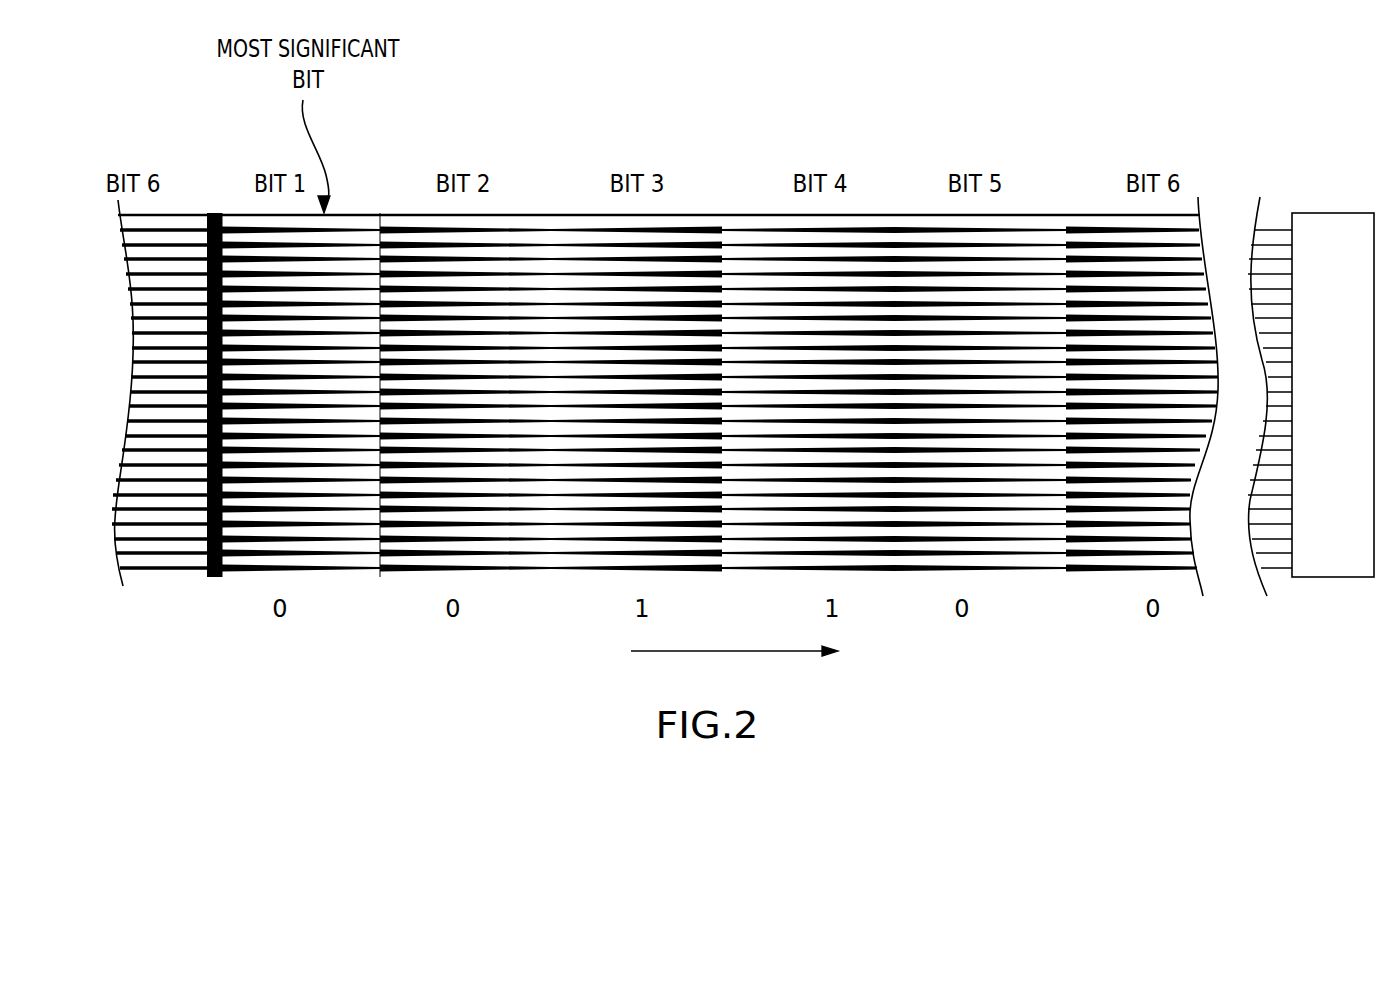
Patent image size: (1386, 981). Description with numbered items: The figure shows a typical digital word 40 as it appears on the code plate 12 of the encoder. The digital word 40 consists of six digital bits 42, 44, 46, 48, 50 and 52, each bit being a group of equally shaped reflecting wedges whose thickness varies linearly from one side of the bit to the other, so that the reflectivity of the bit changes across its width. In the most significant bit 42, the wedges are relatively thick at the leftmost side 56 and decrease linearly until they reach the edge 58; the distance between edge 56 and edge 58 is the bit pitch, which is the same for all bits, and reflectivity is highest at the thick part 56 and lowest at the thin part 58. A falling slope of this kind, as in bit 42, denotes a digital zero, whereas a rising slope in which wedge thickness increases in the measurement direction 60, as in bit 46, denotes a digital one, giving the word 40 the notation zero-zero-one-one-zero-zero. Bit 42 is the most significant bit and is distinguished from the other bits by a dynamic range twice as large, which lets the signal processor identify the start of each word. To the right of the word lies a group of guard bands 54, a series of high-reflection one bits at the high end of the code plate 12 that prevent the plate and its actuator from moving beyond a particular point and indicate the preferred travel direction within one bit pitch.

The code plate 12 is at (218, 213).
The digital word 40 is at (566, 140).
The digital bit 42 is at (358, 213).
The digital bit 44 is at (512, 213).
The digital bit 46 is at (698, 213).
The digital bit 48 is at (866, 213).
The digital bit 50 is at (1032, 213).
The digital bit 52 is at (1093, 213).
The guard bands 54 is at (1335, 213).
The leftmost side of bit 56 is at (222, 577).
The edge of bit 58 is at (388, 577).
The measurement direction 60 is at (830, 655).